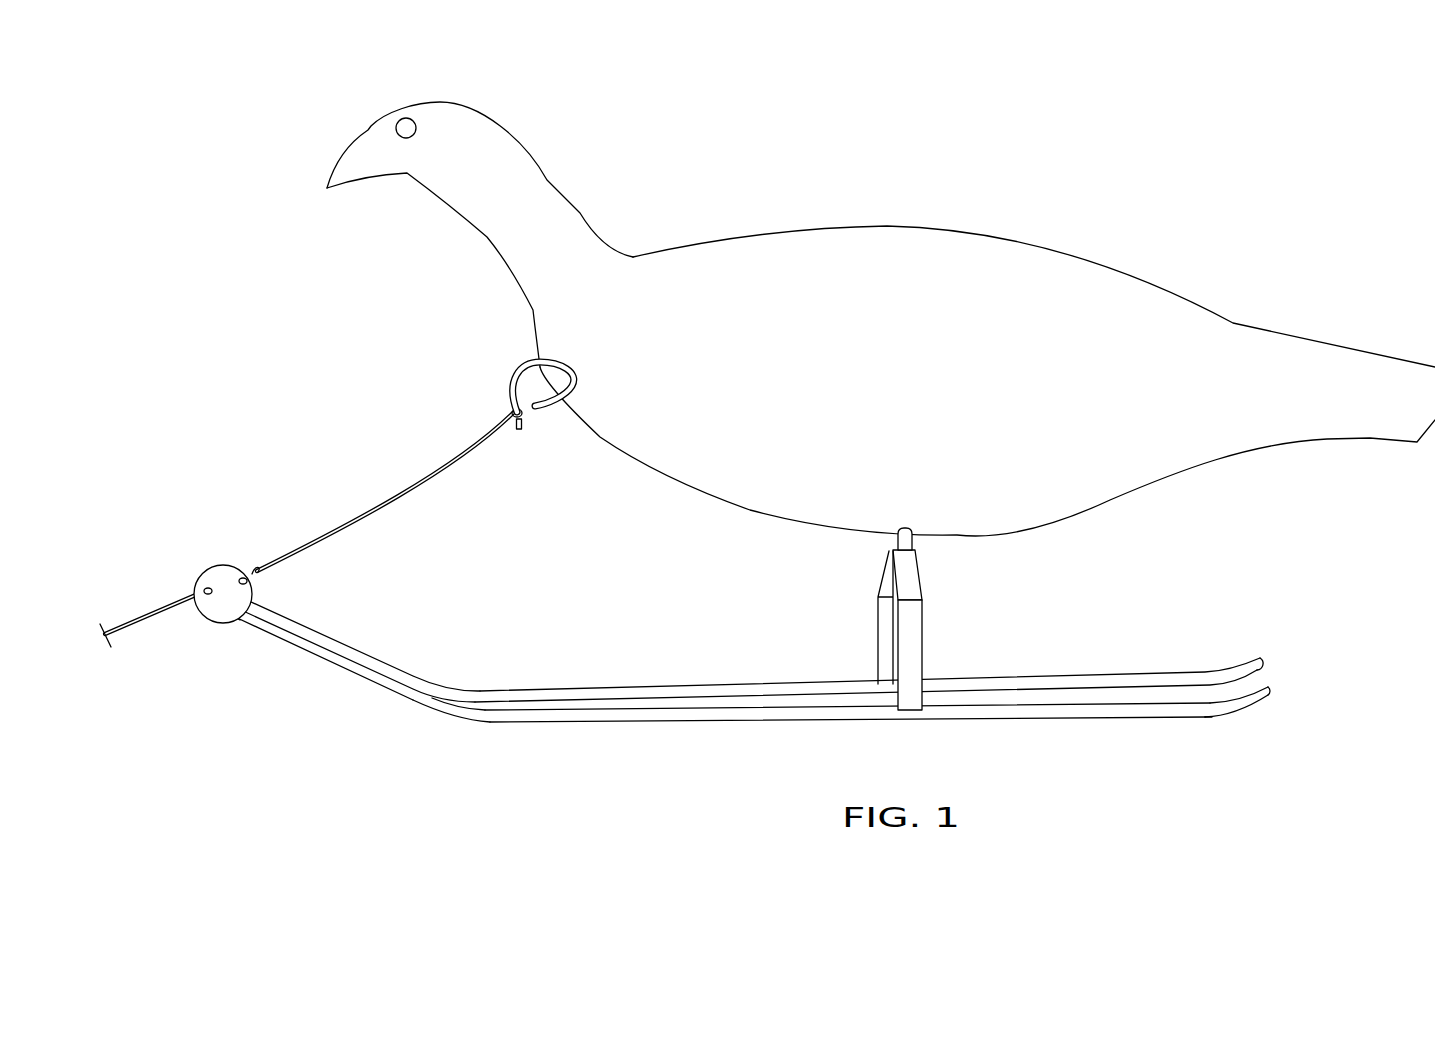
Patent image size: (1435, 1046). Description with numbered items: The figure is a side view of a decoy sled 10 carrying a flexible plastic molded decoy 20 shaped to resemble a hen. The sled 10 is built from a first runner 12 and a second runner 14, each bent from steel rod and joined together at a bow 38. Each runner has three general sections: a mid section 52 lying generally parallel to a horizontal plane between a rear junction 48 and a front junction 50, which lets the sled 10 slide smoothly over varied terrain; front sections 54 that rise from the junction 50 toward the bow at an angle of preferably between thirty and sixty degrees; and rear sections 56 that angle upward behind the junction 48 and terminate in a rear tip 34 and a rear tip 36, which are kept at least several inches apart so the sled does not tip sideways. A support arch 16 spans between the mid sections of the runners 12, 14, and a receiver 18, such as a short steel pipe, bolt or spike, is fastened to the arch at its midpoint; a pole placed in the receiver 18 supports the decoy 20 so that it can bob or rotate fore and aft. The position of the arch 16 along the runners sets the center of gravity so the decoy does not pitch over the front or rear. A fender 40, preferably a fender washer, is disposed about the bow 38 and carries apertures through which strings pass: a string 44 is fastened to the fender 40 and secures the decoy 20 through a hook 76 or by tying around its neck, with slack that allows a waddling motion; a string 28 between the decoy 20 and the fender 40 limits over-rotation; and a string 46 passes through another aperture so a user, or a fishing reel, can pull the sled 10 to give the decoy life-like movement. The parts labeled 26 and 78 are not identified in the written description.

The decoy sled 10 is at (778, 671).
The first runner 12 is at (1088, 718).
The second runner 14 is at (1088, 677).
The support arch 16 is at (918, 578).
The receiver 18 is at (897, 538).
The decoy 20 is at (1118, 288).
The lower rod end 26 is at (233, 623).
The string 28 is at (278, 613).
The rear tip 34 is at (1275, 688).
The rear tip 36 is at (1267, 657).
The bow 38 is at (218, 558).
The fender 40 is at (200, 622).
The string 44 is at (453, 458).
The string 46 is at (143, 610).
The junction 48 is at (1207, 718).
The junction 50 is at (448, 725).
The mid section 52 is at (905, 730).
The front sections 54 is at (340, 689).
The rear sections 56 is at (1252, 717).
The hook 76 is at (520, 376).
The decoy neck 78 is at (578, 216).